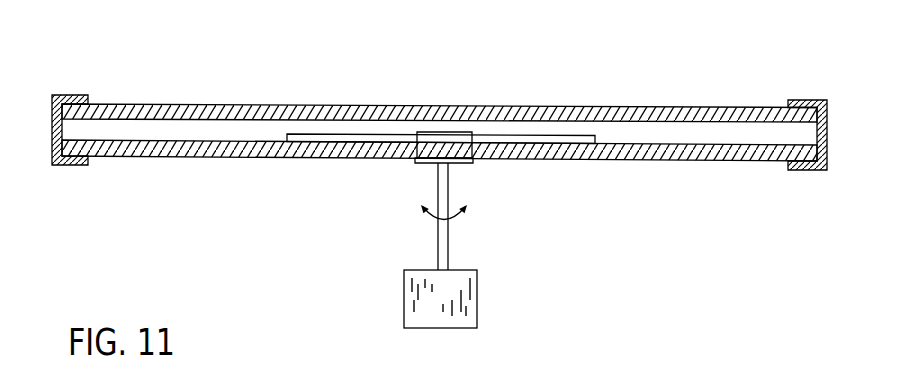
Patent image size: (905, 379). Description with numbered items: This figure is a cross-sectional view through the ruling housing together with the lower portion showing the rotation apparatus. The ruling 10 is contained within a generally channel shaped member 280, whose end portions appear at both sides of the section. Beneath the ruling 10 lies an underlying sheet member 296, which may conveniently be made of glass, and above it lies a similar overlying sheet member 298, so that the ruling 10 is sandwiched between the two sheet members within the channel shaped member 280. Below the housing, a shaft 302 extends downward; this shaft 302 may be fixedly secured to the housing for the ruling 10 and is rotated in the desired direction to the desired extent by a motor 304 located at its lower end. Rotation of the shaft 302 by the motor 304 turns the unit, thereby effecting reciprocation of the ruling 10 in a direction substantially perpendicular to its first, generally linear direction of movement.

The channel shaped member 280 is at (77, 86).
The overlying sheet member 298 is at (192, 104).
The underlying sheet member 296 is at (182, 157).
The ruling 10 is at (489, 132).
The shaft 302 is at (448, 192).
The motor 304 is at (468, 305).